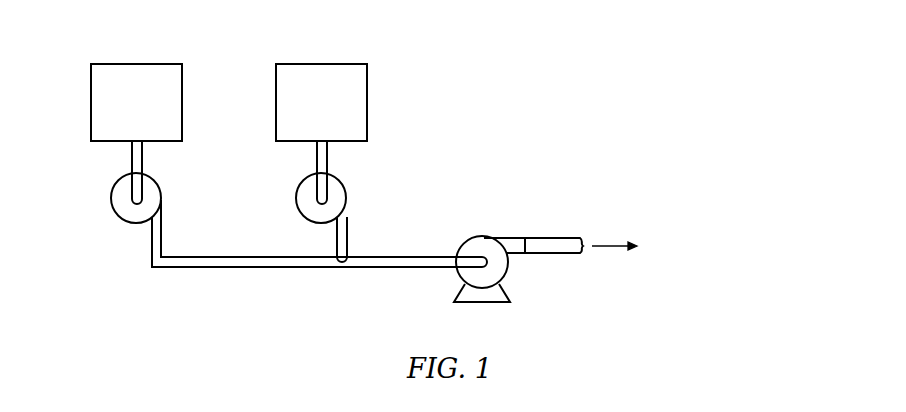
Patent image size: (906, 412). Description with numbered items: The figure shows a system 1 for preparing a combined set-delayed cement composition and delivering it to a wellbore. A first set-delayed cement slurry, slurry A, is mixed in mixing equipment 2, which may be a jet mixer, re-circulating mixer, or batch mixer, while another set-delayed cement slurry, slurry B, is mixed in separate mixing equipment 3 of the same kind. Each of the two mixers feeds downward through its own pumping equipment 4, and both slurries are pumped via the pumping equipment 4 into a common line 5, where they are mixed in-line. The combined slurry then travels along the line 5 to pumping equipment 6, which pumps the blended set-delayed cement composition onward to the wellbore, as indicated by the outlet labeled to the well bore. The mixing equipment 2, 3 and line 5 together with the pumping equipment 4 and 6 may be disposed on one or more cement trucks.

The system 1 is at (559, 76).
The mixing equipment 2 is at (91, 73).
The mixing equipment 3 is at (368, 74).
The pumping equipment 4 is at (157, 178).
The line 5 is at (259, 268).
The pumping equipment 6 is at (482, 237).